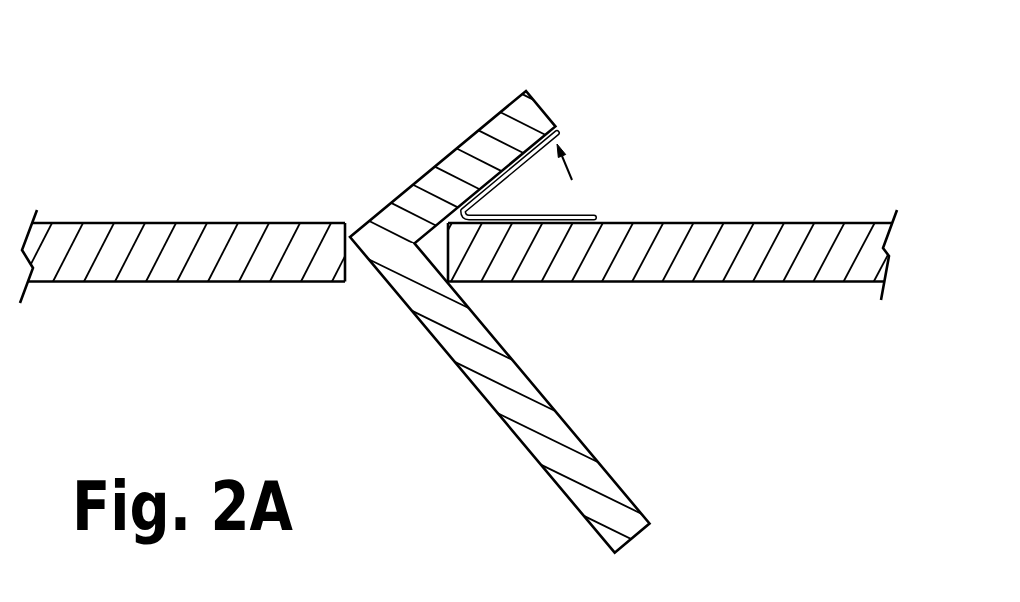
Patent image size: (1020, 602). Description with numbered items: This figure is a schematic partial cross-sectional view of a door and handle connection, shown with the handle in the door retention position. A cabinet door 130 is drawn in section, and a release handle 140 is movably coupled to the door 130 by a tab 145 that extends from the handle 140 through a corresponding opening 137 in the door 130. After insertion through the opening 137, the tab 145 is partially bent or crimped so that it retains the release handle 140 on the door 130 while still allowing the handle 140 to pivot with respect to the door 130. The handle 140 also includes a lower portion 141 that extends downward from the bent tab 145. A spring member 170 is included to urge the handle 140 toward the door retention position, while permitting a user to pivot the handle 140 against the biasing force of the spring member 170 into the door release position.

The cabinet door 130 is at (462, 232).
The opening 137 is at (352, 226).
The release handle 140 is at (469, 286).
The lower arm of bracket 141 is at (585, 491).
The tab 145 is at (516, 118).
The spring member 170 is at (507, 170).